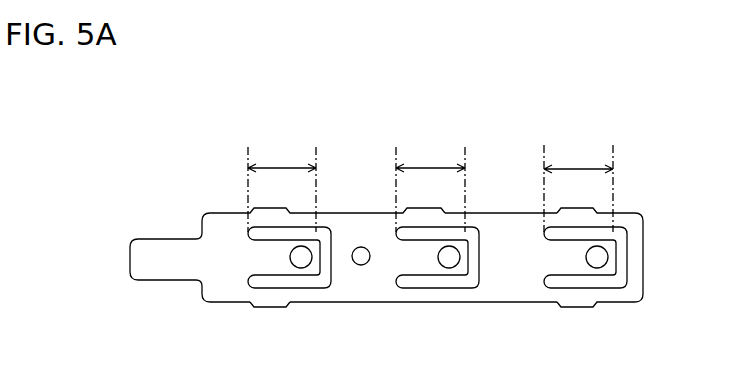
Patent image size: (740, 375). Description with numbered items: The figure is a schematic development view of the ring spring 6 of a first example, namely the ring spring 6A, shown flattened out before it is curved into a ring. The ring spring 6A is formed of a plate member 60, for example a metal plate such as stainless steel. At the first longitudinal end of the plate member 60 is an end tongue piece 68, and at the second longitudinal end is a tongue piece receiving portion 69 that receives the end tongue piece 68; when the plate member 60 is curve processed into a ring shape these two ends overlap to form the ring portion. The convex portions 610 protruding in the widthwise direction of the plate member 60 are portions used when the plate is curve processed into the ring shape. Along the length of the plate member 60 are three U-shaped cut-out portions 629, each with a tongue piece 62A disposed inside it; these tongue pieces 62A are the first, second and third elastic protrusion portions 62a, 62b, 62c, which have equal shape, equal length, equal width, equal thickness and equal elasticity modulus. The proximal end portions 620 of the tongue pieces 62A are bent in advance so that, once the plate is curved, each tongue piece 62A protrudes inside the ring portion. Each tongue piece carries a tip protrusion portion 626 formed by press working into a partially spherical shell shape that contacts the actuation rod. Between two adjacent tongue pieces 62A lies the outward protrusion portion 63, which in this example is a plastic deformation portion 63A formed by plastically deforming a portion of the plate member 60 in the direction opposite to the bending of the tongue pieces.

The ring spring 6 is at (398, 235).
The ring spring 6A is at (189, 121).
The plate member 60 is at (505, 227).
The end tongue piece 68 is at (148, 268).
The tongue piece receiving portion 69 is at (635, 261).
The convex portion 610 is at (266, 308).
The proximal end portion 620 is at (543, 255).
The outward protrusion portion 63 is at (358, 187).
The plastic deformation portion 63A is at (360, 247).
The tongue piece 62A is at (462, 277).
The first elastic protrusion portion 62a is at (276, 263).
The second elastic protrusion portion 62b is at (417, 263).
The third elastic protrusion portion 62c is at (604, 276).
The U-shaped cut-out portion 629 is at (462, 277).
The tip protrusion portion 626 is at (600, 256).